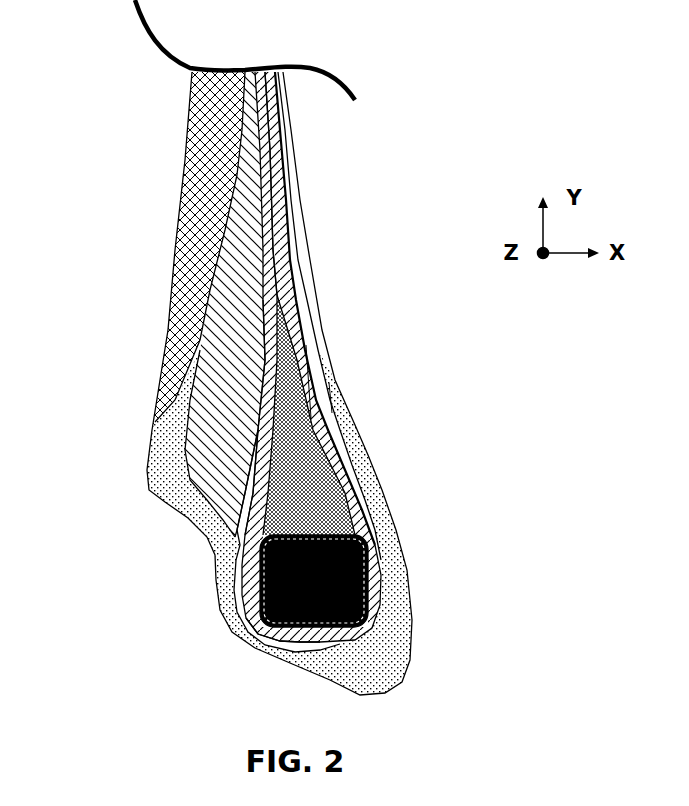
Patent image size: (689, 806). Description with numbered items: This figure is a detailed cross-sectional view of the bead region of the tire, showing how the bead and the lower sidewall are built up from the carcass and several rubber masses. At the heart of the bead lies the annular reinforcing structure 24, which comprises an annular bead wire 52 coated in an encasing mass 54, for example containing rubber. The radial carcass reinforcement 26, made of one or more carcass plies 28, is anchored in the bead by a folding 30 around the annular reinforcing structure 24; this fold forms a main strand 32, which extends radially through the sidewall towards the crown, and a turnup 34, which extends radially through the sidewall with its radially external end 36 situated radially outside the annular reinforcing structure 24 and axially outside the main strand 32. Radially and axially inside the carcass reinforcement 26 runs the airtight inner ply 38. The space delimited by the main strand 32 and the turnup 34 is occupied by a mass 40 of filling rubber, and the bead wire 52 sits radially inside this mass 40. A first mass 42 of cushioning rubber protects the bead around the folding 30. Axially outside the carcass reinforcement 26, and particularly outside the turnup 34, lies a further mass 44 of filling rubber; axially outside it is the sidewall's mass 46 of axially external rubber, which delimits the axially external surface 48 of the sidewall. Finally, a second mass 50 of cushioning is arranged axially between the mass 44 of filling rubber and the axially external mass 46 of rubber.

The annular reinforcing structure 24 is at (238, 593).
The radial carcass reinforcement 26 is at (340, 421).
The carcass ply 28 is at (289, 240).
The folding 30 is at (327, 672).
The main strand 32 is at (300, 357).
The turnup 34 is at (272, 448).
The radially external end of the turnup 36 is at (287, 235).
The airtight inner ply 38 is at (303, 309).
The mass of filling rubber 40 is at (317, 503).
The first mass of cushioning rubber 42 is at (385, 665).
The mass of filling rubber 44 is at (236, 362).
The mass of axially external rubber 46 is at (206, 150).
The axially external surface 48 is at (175, 253).
The second mass of cushioning 50 is at (223, 556).
The annular bead wire 52 is at (374, 603).
The encasing mass 54 is at (274, 633).